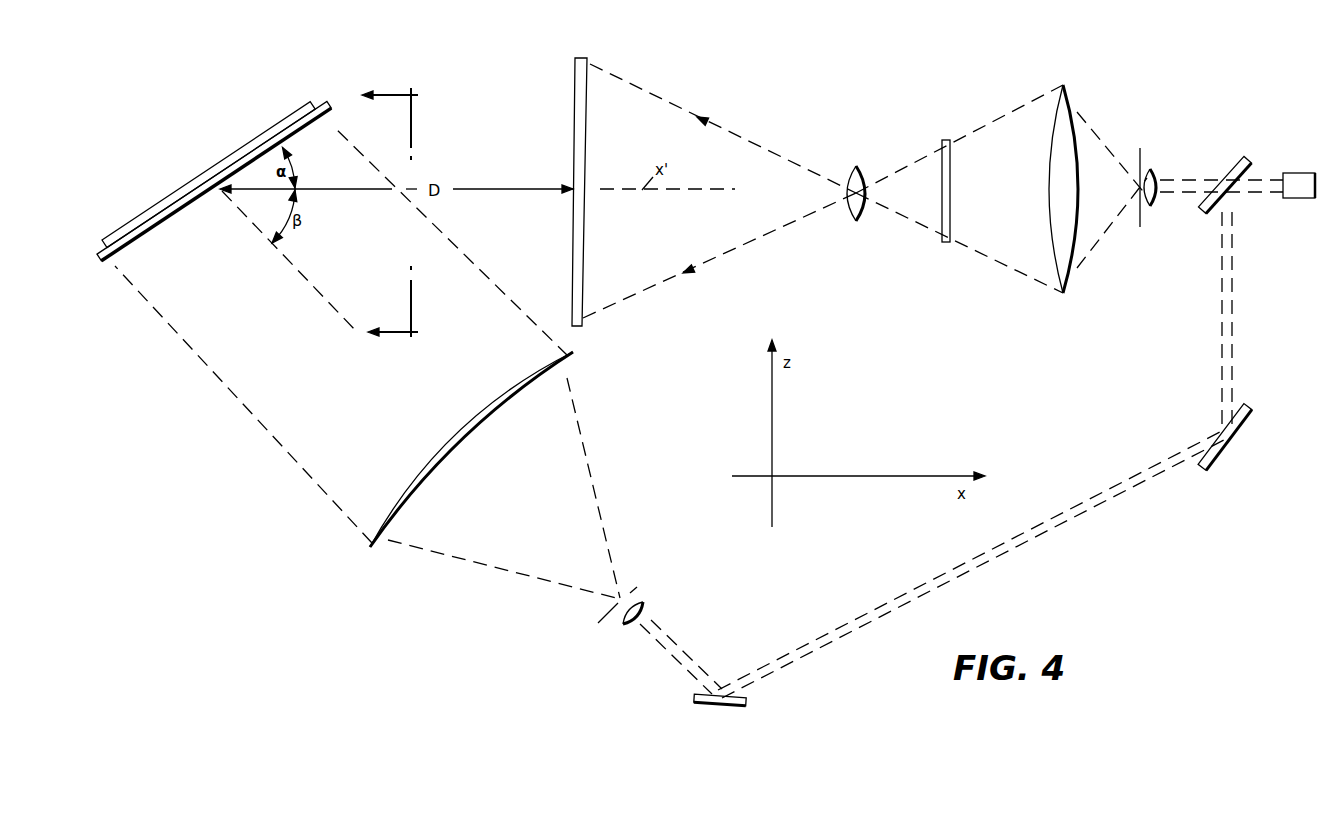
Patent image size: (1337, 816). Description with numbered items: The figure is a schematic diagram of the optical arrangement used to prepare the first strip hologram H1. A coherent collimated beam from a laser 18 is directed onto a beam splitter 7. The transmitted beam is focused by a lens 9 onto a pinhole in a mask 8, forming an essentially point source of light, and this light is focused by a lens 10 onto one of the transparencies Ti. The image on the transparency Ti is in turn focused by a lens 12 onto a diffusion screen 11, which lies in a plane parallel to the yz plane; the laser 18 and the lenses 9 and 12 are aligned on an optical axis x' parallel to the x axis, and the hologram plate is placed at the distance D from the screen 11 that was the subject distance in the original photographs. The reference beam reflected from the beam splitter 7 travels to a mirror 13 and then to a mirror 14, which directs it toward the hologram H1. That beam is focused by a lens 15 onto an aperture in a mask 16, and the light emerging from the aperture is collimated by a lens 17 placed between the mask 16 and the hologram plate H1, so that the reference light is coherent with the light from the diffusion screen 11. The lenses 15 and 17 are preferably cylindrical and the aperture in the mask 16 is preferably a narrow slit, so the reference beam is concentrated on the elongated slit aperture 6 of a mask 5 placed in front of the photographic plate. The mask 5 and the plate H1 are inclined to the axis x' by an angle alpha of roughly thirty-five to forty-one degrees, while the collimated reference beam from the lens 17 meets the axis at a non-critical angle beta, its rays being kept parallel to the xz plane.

The mask 5 is at (108, 268).
The strip hologram H1 is at (317, 98).
The elongated slit aperture 6 is at (387, 203).
The beam splitter 7 is at (1230, 167).
The mask 8 is at (1142, 160).
The lens 9 is at (1158, 195).
The lens 10 is at (1073, 113).
The diffusion screen 11 is at (574, 80).
The lens 12 is at (862, 175).
The mirror 13 is at (1248, 417).
The mirror 14 is at (720, 707).
The lens 15 is at (647, 608).
The mask 16 is at (643, 587).
The lens 17 is at (567, 373).
The laser 18 is at (1312, 199).
The transparency Ti is at (943, 242).